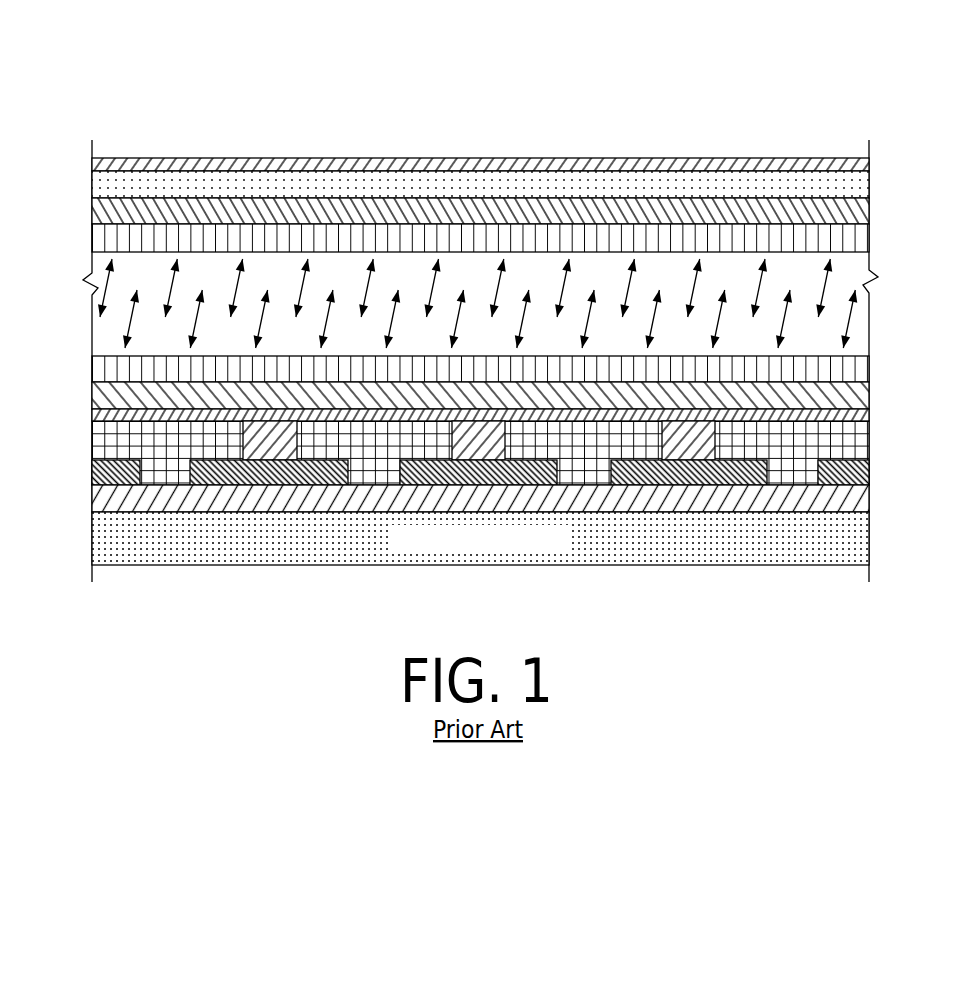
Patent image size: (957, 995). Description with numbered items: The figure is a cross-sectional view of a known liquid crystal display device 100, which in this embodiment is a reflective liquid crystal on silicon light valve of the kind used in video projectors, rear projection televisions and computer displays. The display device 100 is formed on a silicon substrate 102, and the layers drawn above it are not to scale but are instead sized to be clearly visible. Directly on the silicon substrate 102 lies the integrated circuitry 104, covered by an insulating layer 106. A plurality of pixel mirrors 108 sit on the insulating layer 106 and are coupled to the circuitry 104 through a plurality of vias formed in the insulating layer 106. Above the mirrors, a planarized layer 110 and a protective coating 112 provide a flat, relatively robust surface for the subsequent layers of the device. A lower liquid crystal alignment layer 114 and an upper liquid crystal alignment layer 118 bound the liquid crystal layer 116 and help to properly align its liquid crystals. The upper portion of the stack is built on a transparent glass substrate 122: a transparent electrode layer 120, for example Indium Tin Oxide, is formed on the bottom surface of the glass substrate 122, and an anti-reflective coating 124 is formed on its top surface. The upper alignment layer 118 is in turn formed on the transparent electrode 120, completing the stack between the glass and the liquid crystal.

The liquid crystal display device 100 is at (809, 94).
The silicon substrate 102 is at (860, 543).
The integrated circuitry 104 is at (100, 500).
The insulating layer 106 is at (860, 478).
The pixel mirrors 108 is at (100, 442).
The planarized layer 110 is at (860, 414).
The protective coating 112 is at (100, 395).
The lower liquid crystal alignment layer 114 is at (860, 372).
The liquid crystal layer 116 is at (100, 316).
The upper liquid crystal alignment layer 118 is at (860, 237).
The transparent electrode layer 120 is at (100, 212).
The transparent substrate 122 is at (860, 183).
The anti-reflective coating 124 is at (100, 165).